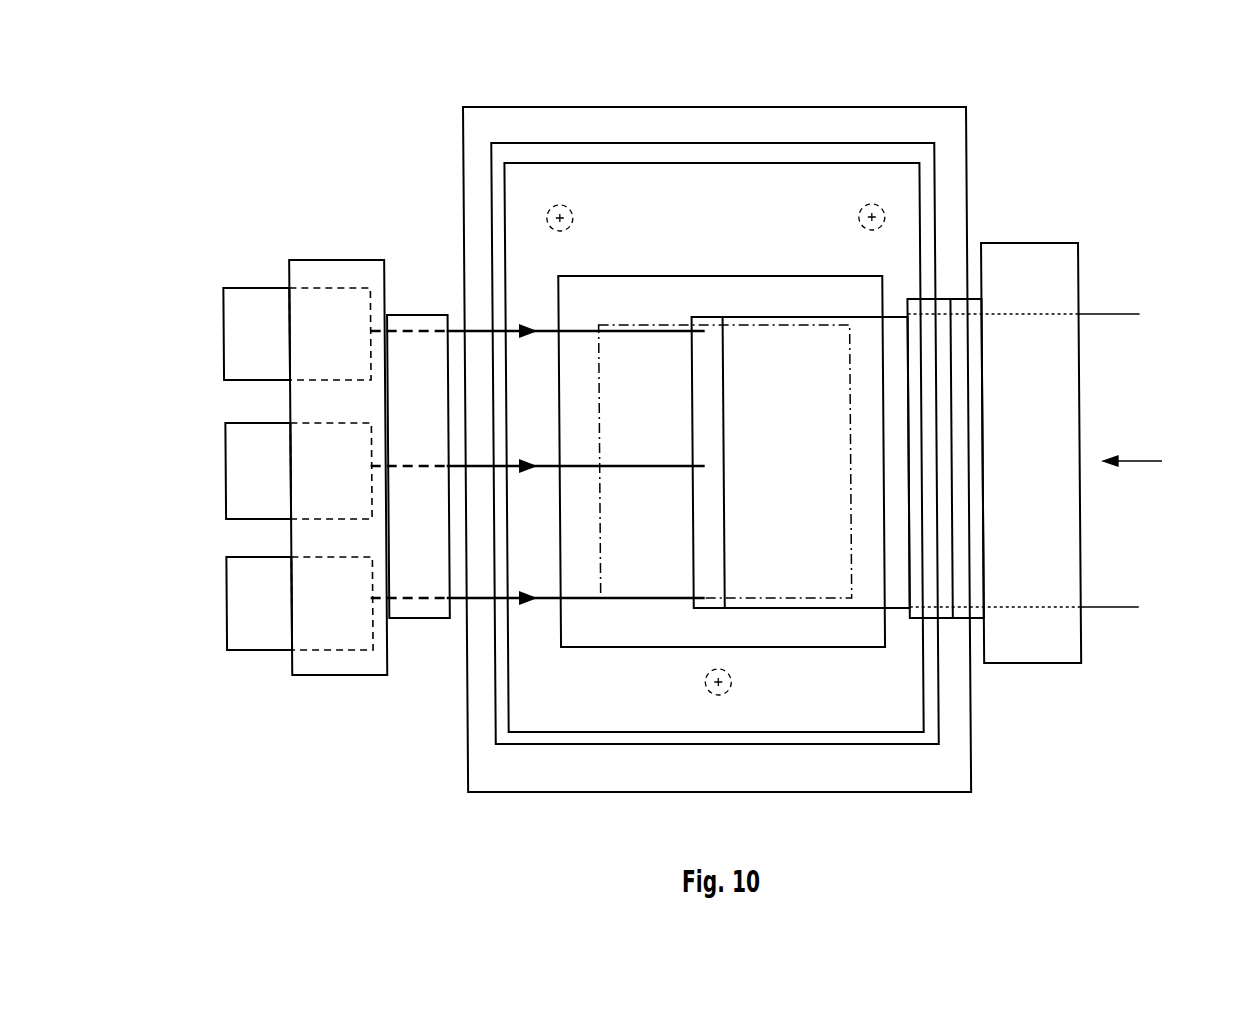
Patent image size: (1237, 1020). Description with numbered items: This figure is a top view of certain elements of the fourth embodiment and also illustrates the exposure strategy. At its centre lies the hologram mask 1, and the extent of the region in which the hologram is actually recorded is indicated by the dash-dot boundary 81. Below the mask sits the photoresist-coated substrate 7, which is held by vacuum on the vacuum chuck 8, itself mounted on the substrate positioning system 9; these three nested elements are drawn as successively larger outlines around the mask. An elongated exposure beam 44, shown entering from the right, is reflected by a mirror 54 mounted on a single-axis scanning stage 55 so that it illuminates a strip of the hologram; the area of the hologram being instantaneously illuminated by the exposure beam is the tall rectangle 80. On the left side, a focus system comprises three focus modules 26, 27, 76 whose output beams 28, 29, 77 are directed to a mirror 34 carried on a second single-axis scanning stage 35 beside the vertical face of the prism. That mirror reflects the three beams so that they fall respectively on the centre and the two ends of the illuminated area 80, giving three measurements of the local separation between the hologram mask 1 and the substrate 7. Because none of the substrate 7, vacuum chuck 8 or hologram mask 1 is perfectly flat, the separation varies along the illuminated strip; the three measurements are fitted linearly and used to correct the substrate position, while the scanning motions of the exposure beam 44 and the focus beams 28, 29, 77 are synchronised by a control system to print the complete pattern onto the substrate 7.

The hologram mask 1 is at (708, 276).
The substrate 7 is at (872, 713).
The vacuum chuck 8 is at (938, 735).
The substrate positioning system 9 is at (971, 792).
The focus module 26 is at (228, 605).
The focus module 27 is at (228, 470).
The focus beam 28 is at (460, 597).
The focus beam 29 is at (455, 470).
The mirror 34 is at (415, 316).
The single-axis scanning stage 35 is at (284, 260).
The exposure beam 44 is at (1154, 467).
The mirror 54 is at (972, 298).
The single-axis scanning stage 55 is at (1068, 653).
The focus module 76 is at (225, 345).
The focus beam 77 is at (457, 340).
The area of the hologram being instantaneously illuminated 80 is at (706, 610).
The extent of the area in which the hologram is recorded 81 is at (787, 325).